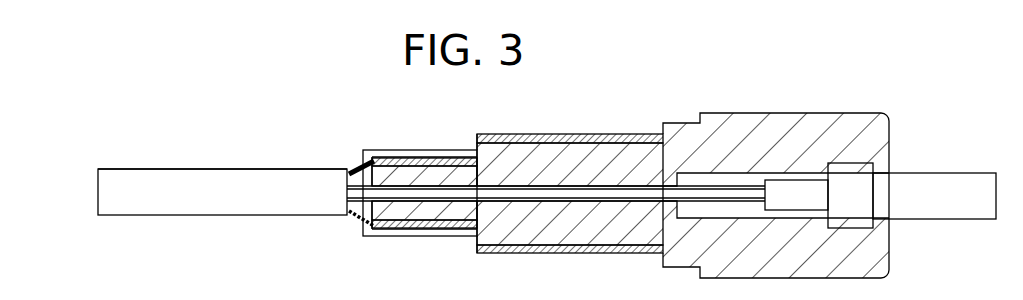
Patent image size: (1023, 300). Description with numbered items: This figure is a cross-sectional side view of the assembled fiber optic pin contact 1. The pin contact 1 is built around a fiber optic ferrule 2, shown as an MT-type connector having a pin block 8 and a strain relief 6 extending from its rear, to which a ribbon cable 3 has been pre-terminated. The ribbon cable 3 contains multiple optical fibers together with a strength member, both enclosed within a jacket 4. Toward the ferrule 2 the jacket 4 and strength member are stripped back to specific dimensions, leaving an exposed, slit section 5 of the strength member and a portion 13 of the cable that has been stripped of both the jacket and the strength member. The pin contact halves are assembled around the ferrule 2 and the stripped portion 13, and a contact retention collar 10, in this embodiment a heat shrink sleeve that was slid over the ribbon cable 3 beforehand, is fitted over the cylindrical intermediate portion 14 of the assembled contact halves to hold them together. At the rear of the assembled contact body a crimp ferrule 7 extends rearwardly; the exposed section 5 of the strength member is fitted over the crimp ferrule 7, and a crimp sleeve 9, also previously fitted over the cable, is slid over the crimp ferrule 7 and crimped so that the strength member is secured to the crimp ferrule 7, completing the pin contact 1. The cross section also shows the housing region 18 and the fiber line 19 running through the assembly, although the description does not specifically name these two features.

The fiber optic pin contact 1 is at (652, 179).
The fiber optic ferrule 2 is at (956, 182).
The ribbon cable 3 is at (199, 214).
The jacket 4 is at (311, 182).
The exposed section of the strength member 5 is at (406, 160).
The strain relief 6 is at (782, 188).
The crimp ferrule 7 is at (444, 178).
The pin block 8 is at (843, 175).
The crimp sleeve 9 is at (393, 237).
The contact retention collar 10 is at (556, 140).
The portion of the cable stripped of jacket and strength member 13 is at (585, 202).
The cylindrical intermediate portion 14 is at (521, 150).
The housing 18 is at (708, 181).
The fiber coating 19 is at (615, 185).